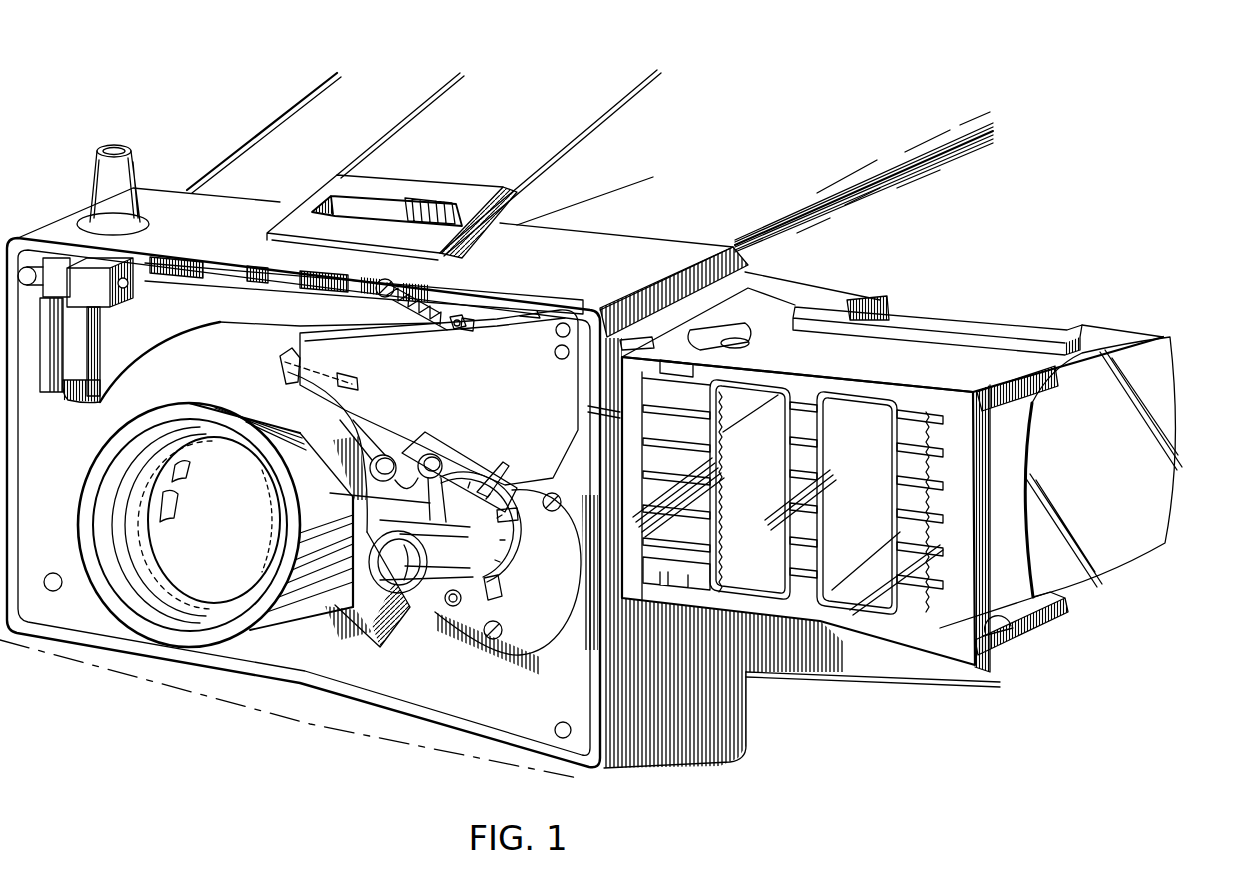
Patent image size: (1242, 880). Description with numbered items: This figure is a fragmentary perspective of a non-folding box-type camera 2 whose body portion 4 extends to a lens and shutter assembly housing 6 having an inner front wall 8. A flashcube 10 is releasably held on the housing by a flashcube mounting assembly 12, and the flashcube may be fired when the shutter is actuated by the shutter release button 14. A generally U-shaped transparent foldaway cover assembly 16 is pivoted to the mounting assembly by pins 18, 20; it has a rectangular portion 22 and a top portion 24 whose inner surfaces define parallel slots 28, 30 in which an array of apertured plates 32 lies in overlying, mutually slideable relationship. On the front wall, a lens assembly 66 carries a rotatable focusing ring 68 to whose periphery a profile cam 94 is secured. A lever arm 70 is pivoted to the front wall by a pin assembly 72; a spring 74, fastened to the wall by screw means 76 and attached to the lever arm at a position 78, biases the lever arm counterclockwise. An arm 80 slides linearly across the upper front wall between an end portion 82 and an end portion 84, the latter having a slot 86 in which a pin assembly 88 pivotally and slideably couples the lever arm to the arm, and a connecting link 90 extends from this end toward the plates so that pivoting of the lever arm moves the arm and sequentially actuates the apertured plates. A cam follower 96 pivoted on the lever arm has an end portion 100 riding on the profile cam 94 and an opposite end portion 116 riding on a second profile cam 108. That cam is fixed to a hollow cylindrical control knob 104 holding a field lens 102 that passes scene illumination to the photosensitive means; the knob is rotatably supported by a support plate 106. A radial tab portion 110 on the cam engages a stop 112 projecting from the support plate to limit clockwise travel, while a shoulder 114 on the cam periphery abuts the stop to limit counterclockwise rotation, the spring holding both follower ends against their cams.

The camera 2 is at (591, 424).
The body portion 4 is at (665, 223).
The lens and shutter assembly housing 6 is at (546, 258).
The inner front wall 8 is at (468, 701).
The flashcube 10 is at (1093, 341).
The flashcube mounting assembly 12 is at (849, 301).
The shutter release button 14 is at (139, 167).
The foldaway cover assembly 16 is at (885, 488).
The pin 18 is at (741, 336).
The pin 20 is at (1045, 629).
The rectangular portion 22 is at (935, 641).
The top portion 24 is at (950, 358).
The slot 28 is at (1012, 402).
The slot 30 is at (993, 616).
The array of apertured plates 32 is at (952, 493).
The lens assembly 66 is at (198, 602).
The focusing ring 68 is at (210, 397).
The lever arm 70 is at (500, 305).
The pin assembly 72 is at (445, 488).
The spring 74 is at (430, 290).
The screw means 76 is at (383, 278).
The position 78 is at (483, 335).
The arm 80 is at (220, 322).
The end portion 82 is at (137, 345).
The end portion 84 is at (592, 414).
The slot 86 is at (566, 323).
The pin assembly 88 is at (559, 357).
The connecting link 90 is at (634, 341).
The profile cam 94 is at (340, 426).
The cam follower 96 is at (420, 389).
The end portion 100 is at (279, 364).
The field lens 102 is at (384, 598).
The control knob 104 is at (415, 616).
The support plate 106 is at (538, 637).
The profile cam 108 is at (493, 547).
The tab portion 110 is at (499, 579).
The stop 112 is at (463, 600).
The shoulder 114 is at (380, 506).
The end portion 116 is at (512, 511).